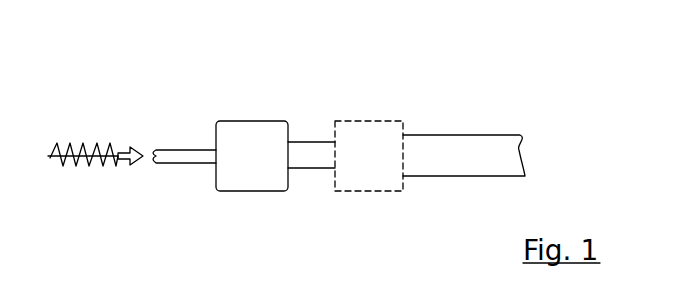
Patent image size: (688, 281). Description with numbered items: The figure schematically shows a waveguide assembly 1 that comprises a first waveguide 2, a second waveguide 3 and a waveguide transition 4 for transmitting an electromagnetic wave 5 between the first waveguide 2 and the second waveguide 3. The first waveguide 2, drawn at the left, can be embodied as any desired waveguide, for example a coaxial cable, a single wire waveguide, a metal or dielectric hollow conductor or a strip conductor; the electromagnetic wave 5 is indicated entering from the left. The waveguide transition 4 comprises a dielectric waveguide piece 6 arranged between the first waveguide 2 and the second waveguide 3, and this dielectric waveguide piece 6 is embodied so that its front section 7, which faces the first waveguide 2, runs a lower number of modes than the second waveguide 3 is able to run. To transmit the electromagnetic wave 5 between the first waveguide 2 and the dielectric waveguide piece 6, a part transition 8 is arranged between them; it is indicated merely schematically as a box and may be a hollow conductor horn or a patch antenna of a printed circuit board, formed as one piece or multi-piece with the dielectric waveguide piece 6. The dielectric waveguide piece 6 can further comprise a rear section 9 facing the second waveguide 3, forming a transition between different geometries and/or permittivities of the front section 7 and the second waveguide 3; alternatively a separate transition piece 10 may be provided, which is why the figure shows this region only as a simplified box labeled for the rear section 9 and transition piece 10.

The waveguide assembly 1 is at (363, 142).
The first waveguide 2 is at (176, 166).
The second waveguide 3 is at (433, 143).
The waveguide transition 4 is at (403, 69).
The electromagnetic wave 5 is at (55, 143).
The dielectric waveguide piece 6 is at (402, 111).
The front section 7 is at (335, 208).
The part transition 8 is at (260, 168).
The rear section 9 is at (377, 191).
The transition piece 10 is at (369, 156).